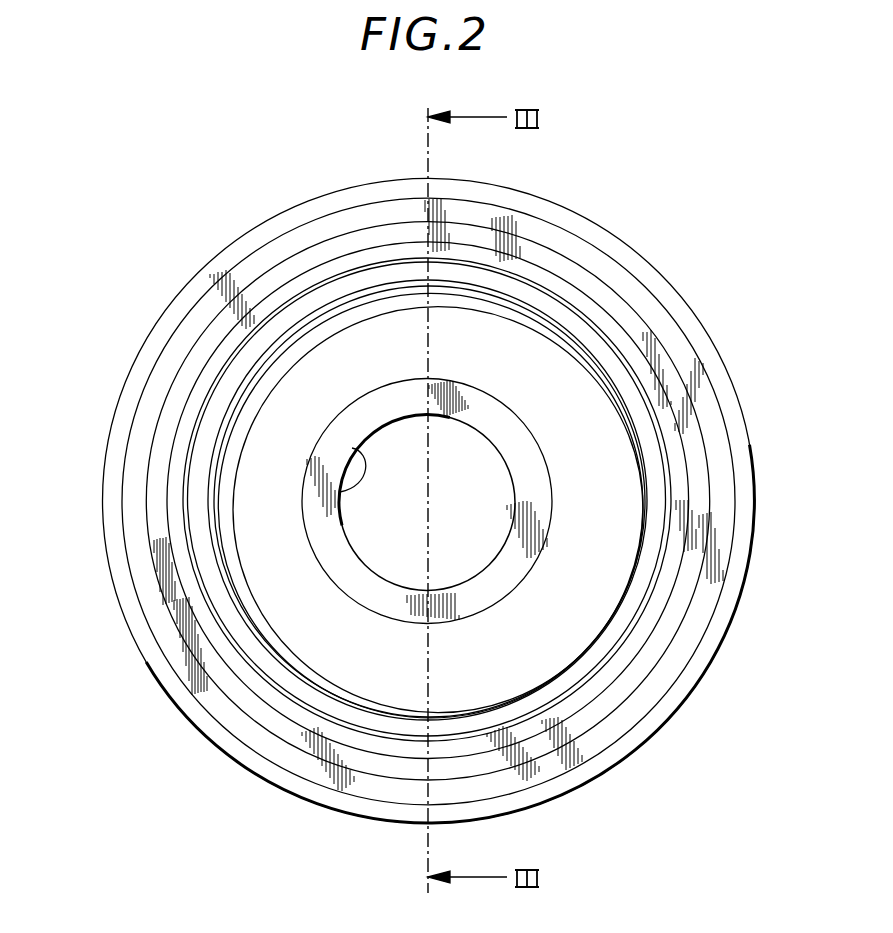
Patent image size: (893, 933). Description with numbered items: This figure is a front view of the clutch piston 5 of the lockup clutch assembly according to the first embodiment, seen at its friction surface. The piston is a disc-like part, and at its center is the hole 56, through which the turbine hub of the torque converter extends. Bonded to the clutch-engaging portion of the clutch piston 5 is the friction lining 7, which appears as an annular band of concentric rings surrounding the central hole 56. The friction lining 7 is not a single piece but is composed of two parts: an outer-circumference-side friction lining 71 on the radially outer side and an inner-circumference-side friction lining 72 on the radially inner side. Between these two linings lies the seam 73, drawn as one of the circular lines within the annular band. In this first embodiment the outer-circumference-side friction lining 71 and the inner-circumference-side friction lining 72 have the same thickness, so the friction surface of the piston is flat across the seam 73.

The clutch piston 5 is at (157, 272).
The friction lining 7 is at (200, 697).
The outer-circumference-side friction lining 71 is at (647, 700).
The inner-circumference-side friction lining 72 is at (670, 630).
The seam 73 is at (667, 657).
The hole 56 is at (340, 492).